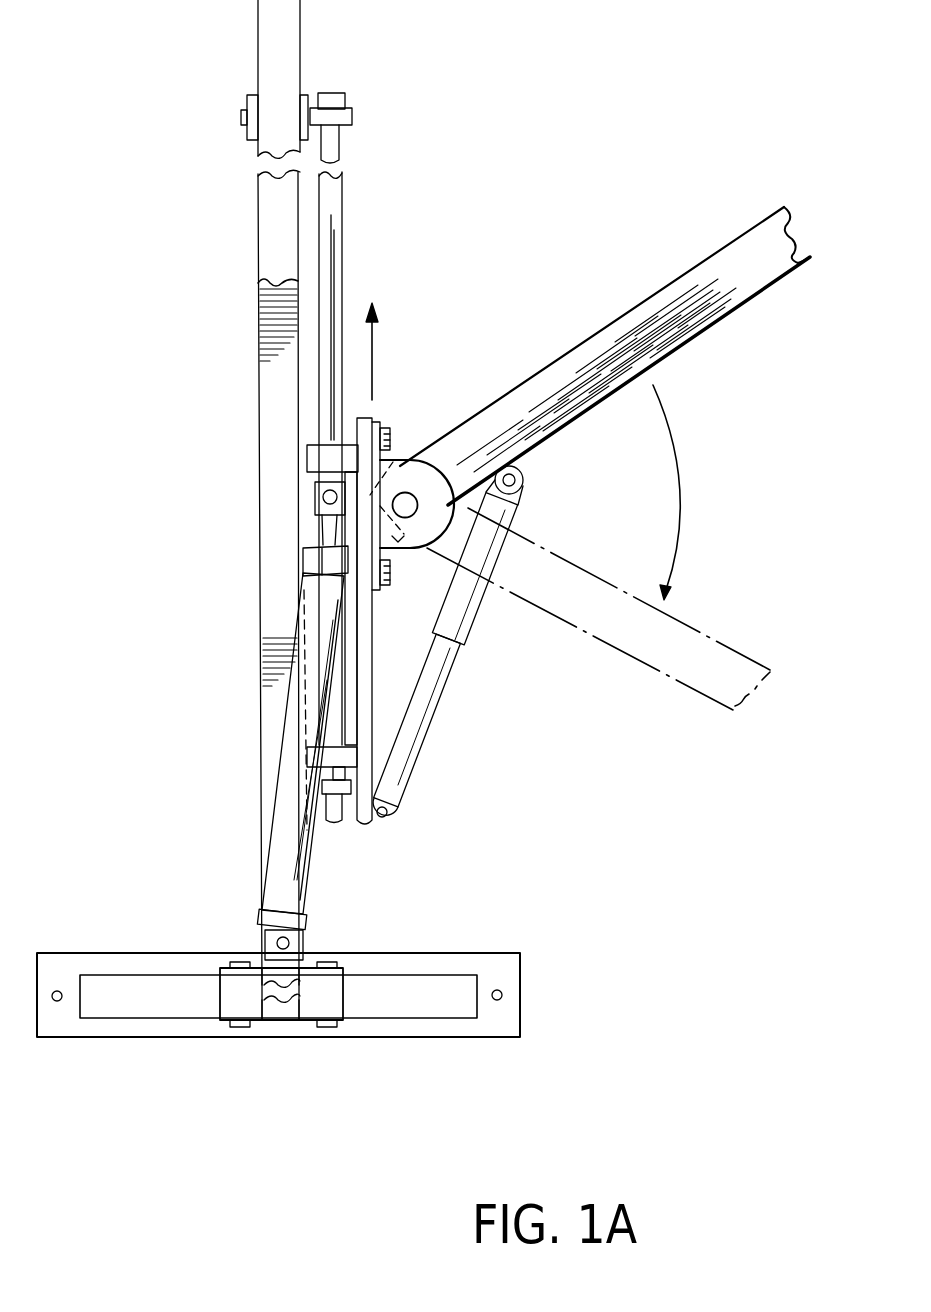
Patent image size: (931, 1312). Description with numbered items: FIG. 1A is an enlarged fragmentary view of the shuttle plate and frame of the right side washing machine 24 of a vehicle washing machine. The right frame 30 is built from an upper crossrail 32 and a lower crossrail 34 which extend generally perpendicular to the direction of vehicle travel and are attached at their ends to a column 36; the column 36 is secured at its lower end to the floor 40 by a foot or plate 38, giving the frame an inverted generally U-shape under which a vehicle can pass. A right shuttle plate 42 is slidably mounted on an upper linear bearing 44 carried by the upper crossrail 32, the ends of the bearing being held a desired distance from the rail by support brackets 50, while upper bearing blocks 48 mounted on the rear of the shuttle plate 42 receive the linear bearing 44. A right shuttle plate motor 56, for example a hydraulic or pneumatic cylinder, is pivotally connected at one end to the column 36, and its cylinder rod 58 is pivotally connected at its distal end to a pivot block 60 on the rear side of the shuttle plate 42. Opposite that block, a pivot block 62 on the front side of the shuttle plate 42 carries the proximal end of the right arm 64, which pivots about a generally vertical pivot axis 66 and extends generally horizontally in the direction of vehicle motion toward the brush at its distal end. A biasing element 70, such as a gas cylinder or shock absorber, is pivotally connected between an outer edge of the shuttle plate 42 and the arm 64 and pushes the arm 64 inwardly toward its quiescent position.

The right side washing machine 24 is at (132, 1060).
The right frame 30 is at (248, 38).
The upper crossrail 32 is at (300, 32).
The lower crossrail 34 is at (270, 621).
The column 36 is at (237, 995).
The foot or plate 38 is at (447, 1037).
The floor 40 is at (613, 914).
The right shuttle plate 42 is at (370, 697).
The upper linear bearing 44 is at (343, 186).
The upper bearing block 48 is at (300, 457).
The support bracket 50 is at (352, 110).
The right shuttle plate motor 56 is at (292, 722).
The cylinder rod 58 is at (308, 541).
The pivot block 60 is at (318, 492).
The pivot block 62 is at (400, 453).
The right arm 64 is at (722, 313).
The pivot axis 66 is at (420, 513).
The biasing element 70 is at (473, 627).